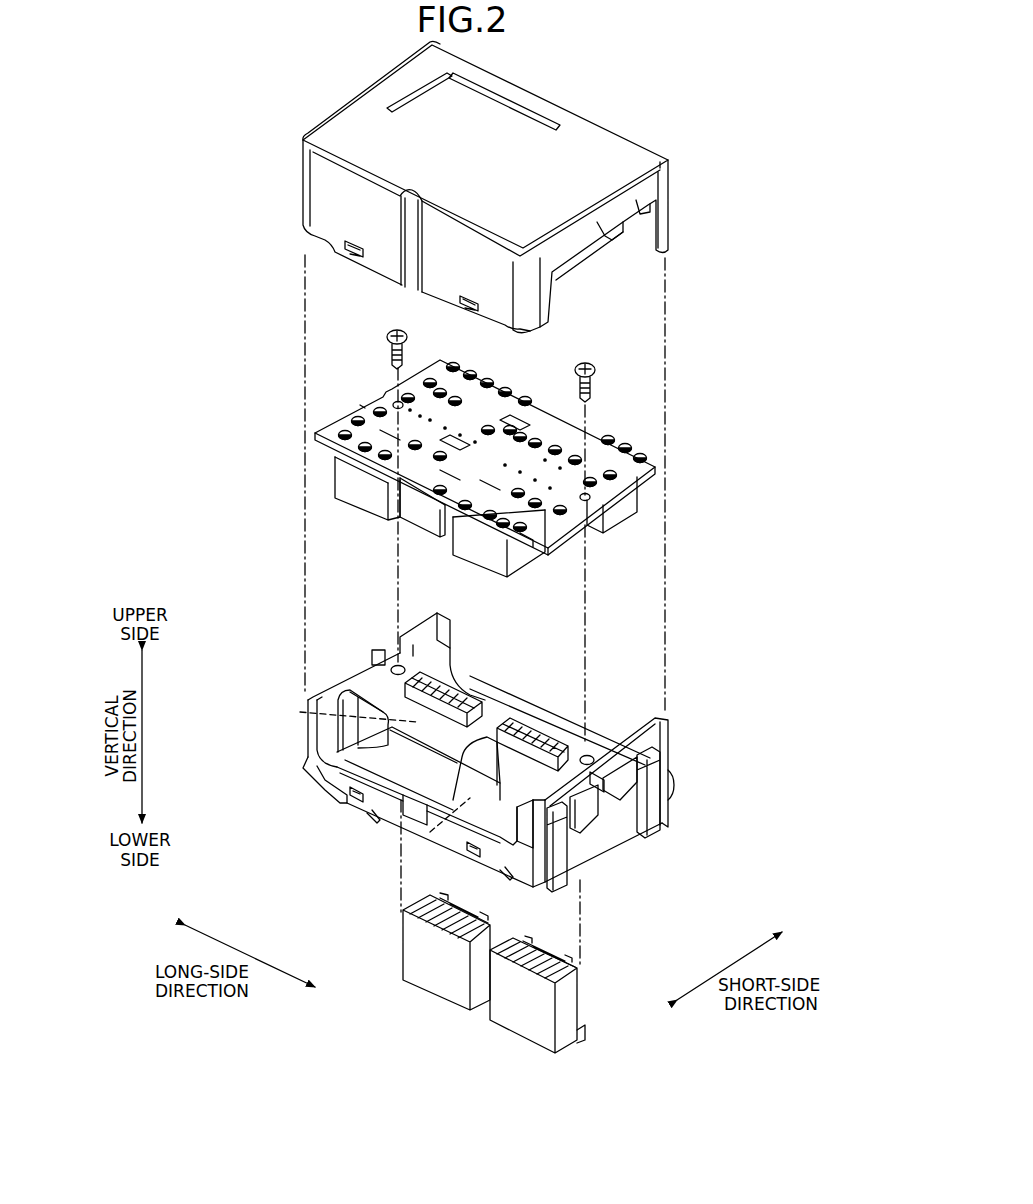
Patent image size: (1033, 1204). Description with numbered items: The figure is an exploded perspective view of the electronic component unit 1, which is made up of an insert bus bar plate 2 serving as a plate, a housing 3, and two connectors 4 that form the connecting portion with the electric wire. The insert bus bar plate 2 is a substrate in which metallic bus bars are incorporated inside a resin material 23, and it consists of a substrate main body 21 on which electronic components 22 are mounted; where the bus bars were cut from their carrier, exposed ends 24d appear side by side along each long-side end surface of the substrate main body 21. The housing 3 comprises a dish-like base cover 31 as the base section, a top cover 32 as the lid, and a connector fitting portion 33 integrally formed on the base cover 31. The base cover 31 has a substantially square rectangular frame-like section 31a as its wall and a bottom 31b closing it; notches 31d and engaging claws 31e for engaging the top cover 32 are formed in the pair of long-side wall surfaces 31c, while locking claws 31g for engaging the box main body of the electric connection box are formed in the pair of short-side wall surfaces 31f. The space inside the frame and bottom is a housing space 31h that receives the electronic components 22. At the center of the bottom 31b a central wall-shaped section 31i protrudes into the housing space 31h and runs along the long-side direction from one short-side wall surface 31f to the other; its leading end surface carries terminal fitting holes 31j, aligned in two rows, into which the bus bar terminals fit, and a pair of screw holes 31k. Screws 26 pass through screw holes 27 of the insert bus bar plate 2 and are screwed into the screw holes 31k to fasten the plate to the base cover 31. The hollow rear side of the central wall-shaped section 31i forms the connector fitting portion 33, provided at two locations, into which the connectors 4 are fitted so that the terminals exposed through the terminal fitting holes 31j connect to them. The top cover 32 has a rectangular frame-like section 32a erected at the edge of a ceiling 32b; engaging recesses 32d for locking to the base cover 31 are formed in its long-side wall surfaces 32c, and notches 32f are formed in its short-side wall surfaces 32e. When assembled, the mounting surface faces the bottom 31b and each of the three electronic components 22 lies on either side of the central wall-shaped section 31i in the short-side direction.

The electronic component unit 1 is at (255, 72).
The insert bus bar plate 2 is at (672, 418).
The housing 3 is at (191, 726).
The connector 4 is at (420, 998).
The substrate main body 21 is at (655, 447).
The electronic component 22 is at (655, 523).
The resin material 23 is at (598, 425).
The exposed end 24d is at (375, 478).
The screw 26 is at (388, 332).
The screw hole 27 is at (388, 397).
The base cover 31 is at (290, 695).
The rectangular frame-like section 31a is at (675, 750).
The bottom 31b is at (328, 782).
The long-side wall surface 31c is at (390, 812).
The notch 31d is at (625, 735).
The engaging claw 31e is at (345, 812).
The short-side wall surface 31f is at (335, 698).
The locking claw 31g is at (648, 835).
The housing space 31h is at (522, 755).
The central wall-shaped section 31i is at (478, 700).
The terminal fitting hole 31j is at (530, 770).
The screw hole 31k is at (392, 665).
The top cover 32 is at (288, 155).
The rectangular frame-like section 32a is at (676, 204).
The ceiling 32b is at (545, 152).
The long-side wall surface 32c is at (346, 190).
The engaging recess 32d is at (470, 312).
The short-side wall surface 32e is at (395, 86).
The notch 32f is at (608, 238).
The connector fitting portion 33 is at (300, 712).